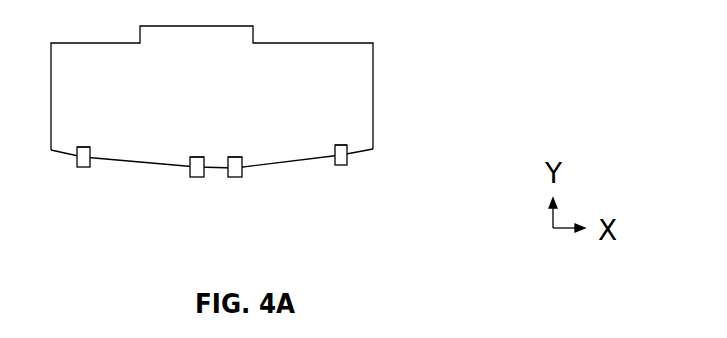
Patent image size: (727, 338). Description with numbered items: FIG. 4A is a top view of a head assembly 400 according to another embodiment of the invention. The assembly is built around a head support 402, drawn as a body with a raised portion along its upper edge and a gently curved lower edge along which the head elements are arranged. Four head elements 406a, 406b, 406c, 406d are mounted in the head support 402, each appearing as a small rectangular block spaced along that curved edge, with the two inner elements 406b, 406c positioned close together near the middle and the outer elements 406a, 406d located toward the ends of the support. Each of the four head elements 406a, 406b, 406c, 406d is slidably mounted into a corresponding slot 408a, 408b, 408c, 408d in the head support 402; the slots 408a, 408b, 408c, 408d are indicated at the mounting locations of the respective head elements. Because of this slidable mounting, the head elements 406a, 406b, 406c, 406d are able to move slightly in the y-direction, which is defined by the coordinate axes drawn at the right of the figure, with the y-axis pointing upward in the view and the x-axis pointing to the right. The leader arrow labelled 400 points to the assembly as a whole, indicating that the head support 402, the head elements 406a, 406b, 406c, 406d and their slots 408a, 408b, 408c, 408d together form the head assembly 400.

The head assembly 400 is at (564, 109).
The head support 402 is at (373, 96).
The head element 406a is at (83, 167).
The head element 406b is at (197, 177).
The head element 406c is at (235, 177).
The head element 406d is at (341, 165).
The slot 408a is at (83, 147).
The slot 408b is at (197, 157).
The slot 408c is at (235, 157).
The slot 408d is at (341, 145).